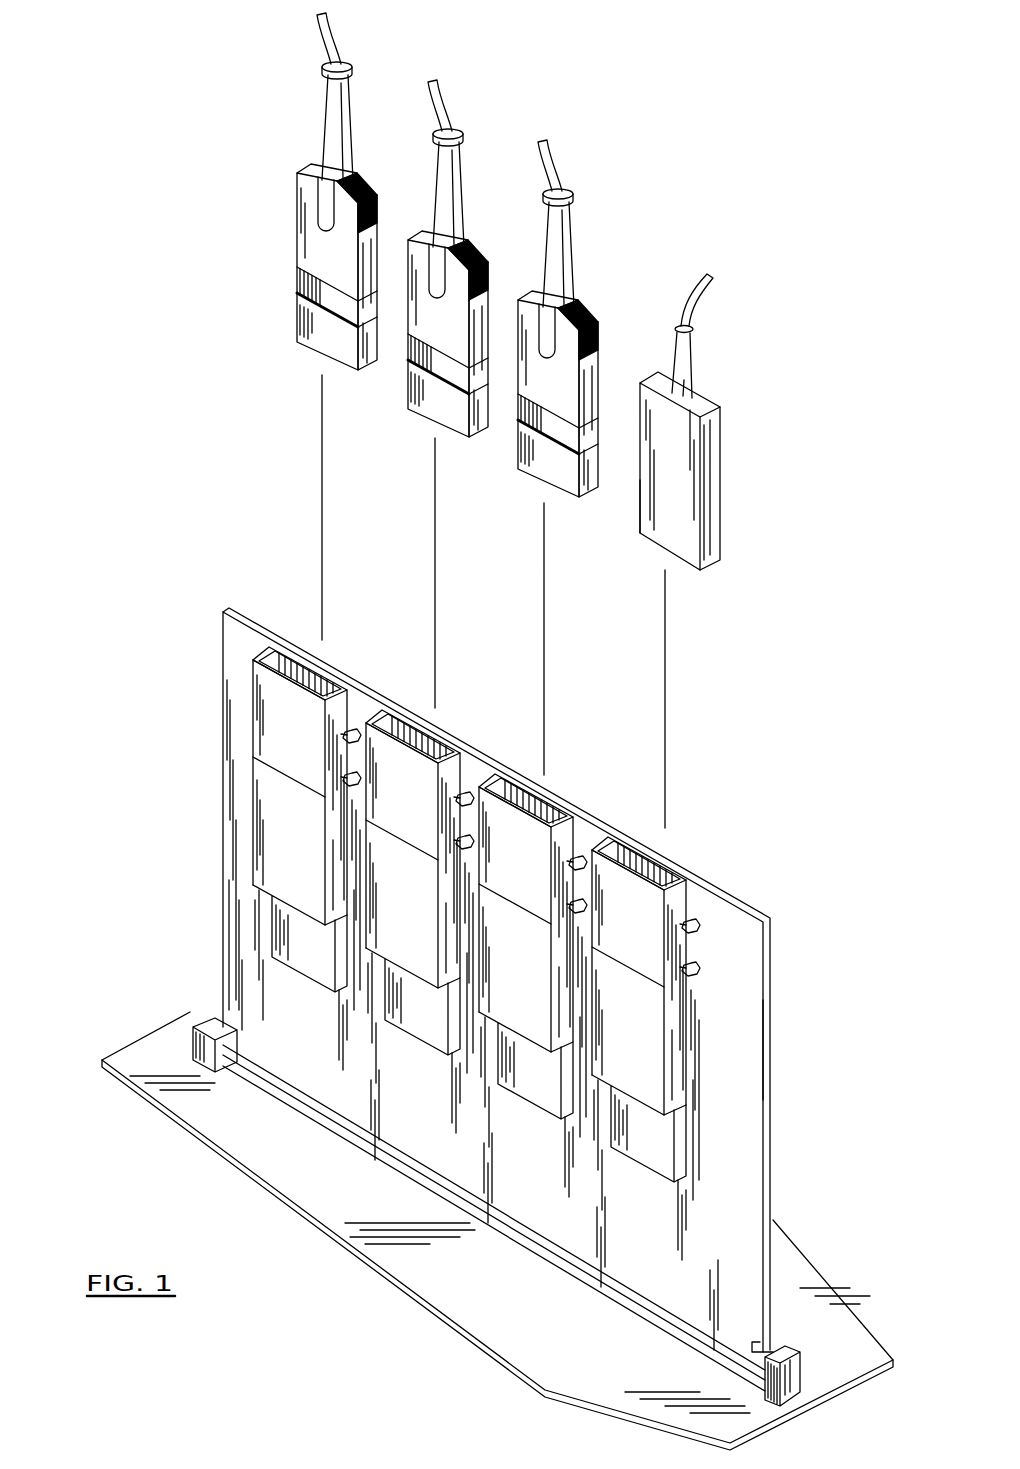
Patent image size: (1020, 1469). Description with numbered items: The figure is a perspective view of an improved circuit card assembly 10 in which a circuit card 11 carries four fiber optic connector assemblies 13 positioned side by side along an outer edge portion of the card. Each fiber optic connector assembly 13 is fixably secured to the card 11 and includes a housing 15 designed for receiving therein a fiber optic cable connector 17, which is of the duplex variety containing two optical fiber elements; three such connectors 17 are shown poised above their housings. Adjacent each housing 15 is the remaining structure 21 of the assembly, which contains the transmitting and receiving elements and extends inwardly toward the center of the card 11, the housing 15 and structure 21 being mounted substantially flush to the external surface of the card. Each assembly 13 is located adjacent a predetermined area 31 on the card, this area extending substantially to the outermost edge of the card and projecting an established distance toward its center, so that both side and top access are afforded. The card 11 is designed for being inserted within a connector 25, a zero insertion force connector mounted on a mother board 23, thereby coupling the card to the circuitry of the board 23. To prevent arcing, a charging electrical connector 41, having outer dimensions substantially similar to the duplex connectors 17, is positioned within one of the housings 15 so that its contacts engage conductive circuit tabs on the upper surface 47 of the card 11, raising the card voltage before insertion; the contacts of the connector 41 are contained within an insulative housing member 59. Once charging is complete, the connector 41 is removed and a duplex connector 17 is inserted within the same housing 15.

The circuit card assembly 10 is at (156, 652).
The circuit card 11 is at (490, 980).
The fiber optic connector assembly 13 is at (492, 961).
The housing 15 is at (279, 735).
The fiber optic cable connector 17 is at (282, 306).
The structure 21 is at (263, 797).
The mother board 23 is at (142, 1043).
The connector 25 is at (213, 1013).
The predetermined area 31 is at (300, 642).
The electrical connector 41 is at (687, 422).
The upper surface 47 is at (752, 1003).
The insulative housing member 59 is at (654, 526).